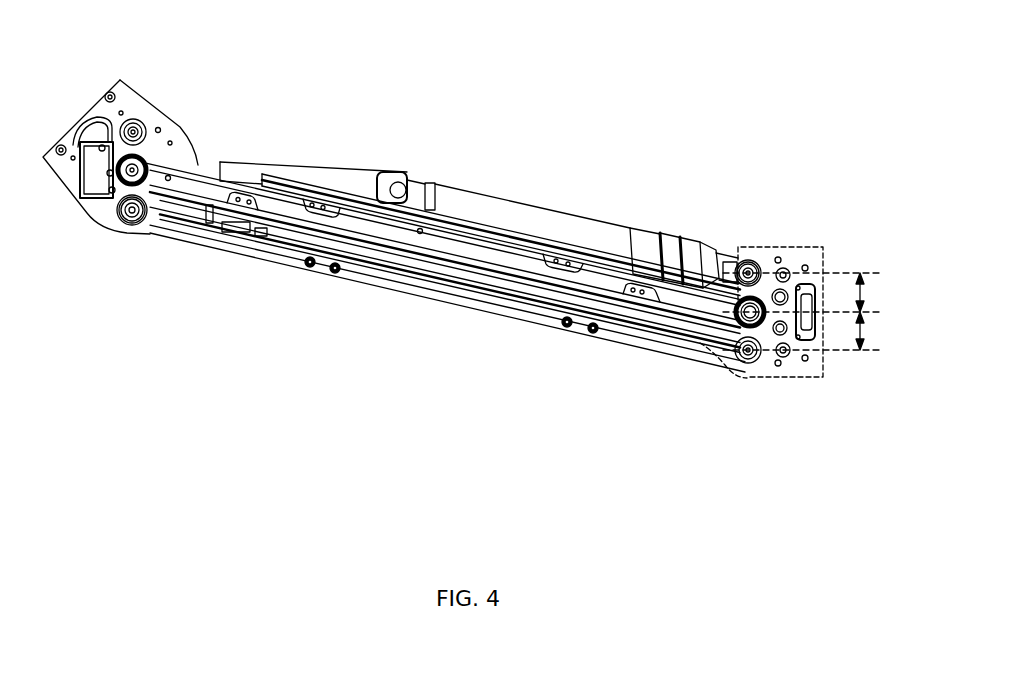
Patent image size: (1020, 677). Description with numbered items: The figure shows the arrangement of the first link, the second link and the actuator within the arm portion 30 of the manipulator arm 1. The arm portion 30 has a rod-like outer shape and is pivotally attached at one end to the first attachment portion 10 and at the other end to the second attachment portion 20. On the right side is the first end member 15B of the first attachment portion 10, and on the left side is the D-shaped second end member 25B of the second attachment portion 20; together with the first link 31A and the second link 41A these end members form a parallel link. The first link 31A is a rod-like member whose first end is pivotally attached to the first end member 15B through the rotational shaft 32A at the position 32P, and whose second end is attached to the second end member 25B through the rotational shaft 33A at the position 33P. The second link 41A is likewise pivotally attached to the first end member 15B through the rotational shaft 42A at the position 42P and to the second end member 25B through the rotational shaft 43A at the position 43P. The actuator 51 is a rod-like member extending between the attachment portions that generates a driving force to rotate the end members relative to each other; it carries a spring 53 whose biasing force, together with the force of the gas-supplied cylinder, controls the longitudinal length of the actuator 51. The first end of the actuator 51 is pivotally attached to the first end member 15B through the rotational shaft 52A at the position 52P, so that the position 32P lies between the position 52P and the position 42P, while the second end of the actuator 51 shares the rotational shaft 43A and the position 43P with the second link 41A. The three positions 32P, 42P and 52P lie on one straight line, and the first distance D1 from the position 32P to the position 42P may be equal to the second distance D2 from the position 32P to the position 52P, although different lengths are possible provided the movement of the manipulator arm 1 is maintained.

The manipulator arm 1 is at (760, 77).
The first attachment portion 10 is at (755, 447).
The first end member 15B is at (811, 247).
The second attachment portion 20 is at (102, 320).
The second end member 25B is at (136, 100).
The arm portion 30 is at (429, 380).
The first link 31A is at (432, 243).
The rotational shaft 32A is at (762, 321).
The position 32P is at (740, 318).
The rotational shaft 33A is at (107, 142).
The position 33P is at (153, 152).
The second link 41A is at (527, 305).
The rotational shaft 42A is at (737, 356).
The position 42P is at (758, 358).
The rotational shaft 43A is at (137, 213).
The position 43P is at (112, 230).
The actuator 51 is at (565, 228).
The rotational shaft 52A is at (756, 271).
The position 52P is at (745, 262).
The spring 53 is at (335, 172).
The first distance D1 is at (815, 331).
The second distance D2 is at (815, 292).